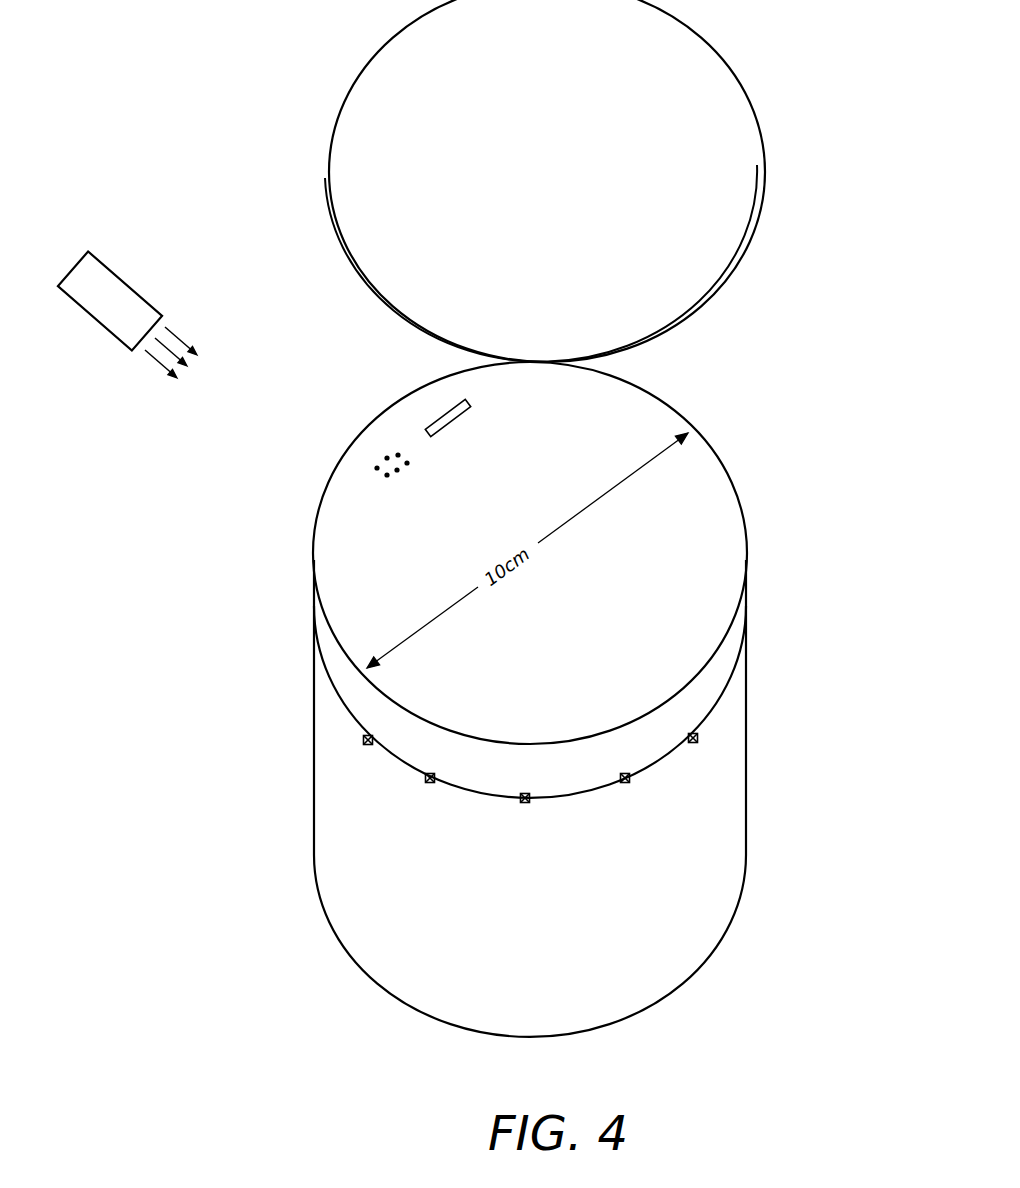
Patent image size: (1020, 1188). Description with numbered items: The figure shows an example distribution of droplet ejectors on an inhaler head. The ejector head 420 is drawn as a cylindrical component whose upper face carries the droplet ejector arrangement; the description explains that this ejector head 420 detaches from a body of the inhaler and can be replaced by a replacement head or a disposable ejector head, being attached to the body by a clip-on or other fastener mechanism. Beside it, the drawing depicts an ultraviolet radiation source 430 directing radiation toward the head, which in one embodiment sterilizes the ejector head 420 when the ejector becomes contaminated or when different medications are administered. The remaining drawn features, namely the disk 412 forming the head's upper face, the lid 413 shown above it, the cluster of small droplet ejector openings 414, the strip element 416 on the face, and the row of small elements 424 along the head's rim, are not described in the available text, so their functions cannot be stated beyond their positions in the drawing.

The sample disk 412 is at (622, 412).
The lid 413 is at (741, 66).
The particles 414 is at (368, 490).
The sample strip 416 is at (450, 420).
The ejector head 420 is at (300, 706).
The sensors 424 is at (632, 778).
The ultraviolet (UV) radiation source 430 is at (130, 265).